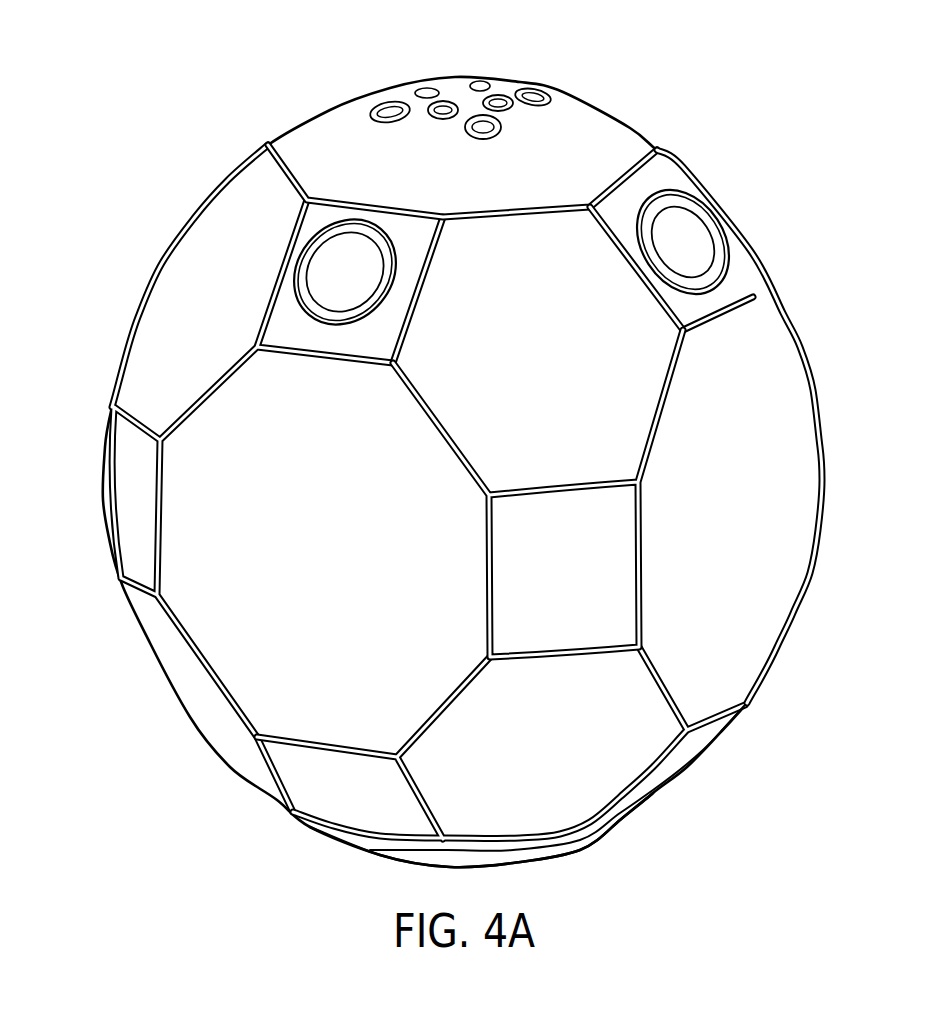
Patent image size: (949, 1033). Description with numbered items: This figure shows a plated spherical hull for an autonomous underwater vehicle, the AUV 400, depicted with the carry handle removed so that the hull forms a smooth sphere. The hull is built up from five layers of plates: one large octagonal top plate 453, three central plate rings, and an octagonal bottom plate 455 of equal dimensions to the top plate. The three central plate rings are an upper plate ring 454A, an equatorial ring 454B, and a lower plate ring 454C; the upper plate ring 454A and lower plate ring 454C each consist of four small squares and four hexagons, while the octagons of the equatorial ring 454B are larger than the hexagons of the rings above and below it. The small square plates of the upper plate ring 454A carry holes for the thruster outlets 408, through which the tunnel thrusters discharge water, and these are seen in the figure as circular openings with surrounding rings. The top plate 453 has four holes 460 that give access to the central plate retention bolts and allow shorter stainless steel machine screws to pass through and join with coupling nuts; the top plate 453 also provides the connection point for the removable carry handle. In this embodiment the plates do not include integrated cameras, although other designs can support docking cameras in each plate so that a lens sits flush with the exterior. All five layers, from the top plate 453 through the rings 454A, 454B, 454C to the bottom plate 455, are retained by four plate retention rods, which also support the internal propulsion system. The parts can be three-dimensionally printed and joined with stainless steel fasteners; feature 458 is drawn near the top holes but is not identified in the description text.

The AUV 400 is at (192, 107).
The thruster outlets 408 is at (703, 230).
The top plate 453 is at (607, 147).
The upper plate ring 454A is at (287, 258).
The equatorial ring 454B is at (595, 548).
The lower plate ring 454C is at (617, 773).
The bottom plate 455 is at (537, 857).
The speaker holes 458 is at (497, 82).
The holes 460 is at (543, 98).